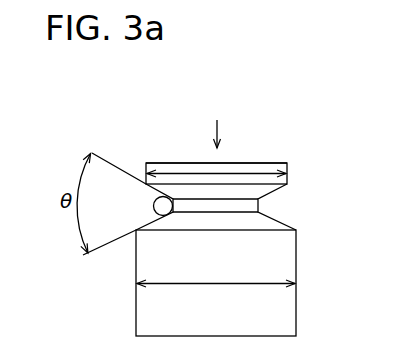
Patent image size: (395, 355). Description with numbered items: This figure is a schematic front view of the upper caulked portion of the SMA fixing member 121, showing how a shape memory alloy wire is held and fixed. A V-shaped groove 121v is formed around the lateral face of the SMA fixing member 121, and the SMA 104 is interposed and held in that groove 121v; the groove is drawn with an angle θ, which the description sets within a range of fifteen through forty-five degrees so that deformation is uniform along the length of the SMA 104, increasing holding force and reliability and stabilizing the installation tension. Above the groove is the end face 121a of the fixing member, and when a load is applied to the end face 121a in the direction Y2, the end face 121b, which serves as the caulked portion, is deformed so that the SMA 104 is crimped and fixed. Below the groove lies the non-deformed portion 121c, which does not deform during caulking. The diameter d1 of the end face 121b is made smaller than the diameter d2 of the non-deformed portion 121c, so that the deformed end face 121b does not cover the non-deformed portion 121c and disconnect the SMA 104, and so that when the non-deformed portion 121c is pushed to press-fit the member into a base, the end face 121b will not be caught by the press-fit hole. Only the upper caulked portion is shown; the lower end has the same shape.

The SMA fixing member 121 is at (217, 76).
The end face 121a is at (258, 163).
The end face as caulked portion 121b is at (287, 164).
The non-deformed portion 121c is at (137, 263).
The V-shaped groove 121v is at (161, 194).
The SMA 104 is at (154, 206).
The diameter of the end face d1 is at (195, 173).
The diameter of the non-deformed portion d2 is at (232, 284).
The direction Y2 is at (232, 134).